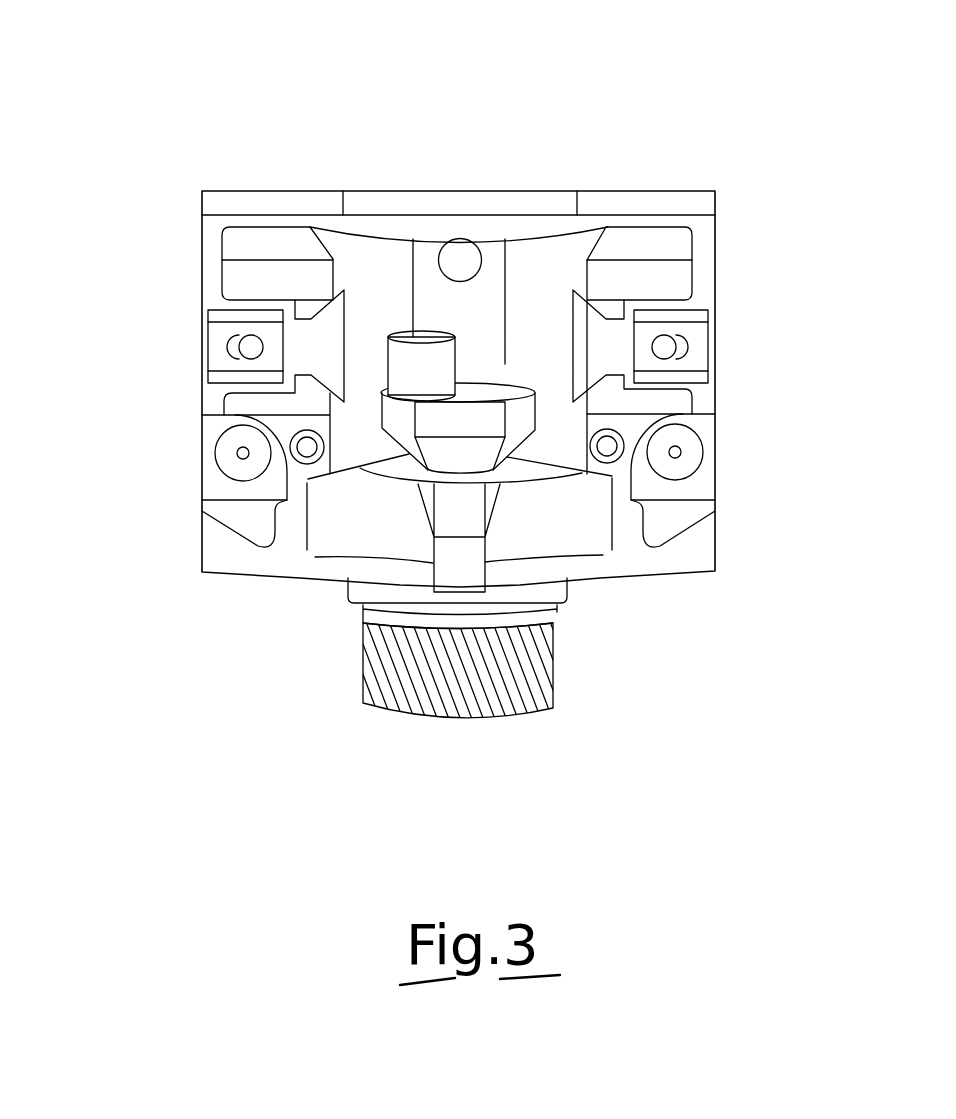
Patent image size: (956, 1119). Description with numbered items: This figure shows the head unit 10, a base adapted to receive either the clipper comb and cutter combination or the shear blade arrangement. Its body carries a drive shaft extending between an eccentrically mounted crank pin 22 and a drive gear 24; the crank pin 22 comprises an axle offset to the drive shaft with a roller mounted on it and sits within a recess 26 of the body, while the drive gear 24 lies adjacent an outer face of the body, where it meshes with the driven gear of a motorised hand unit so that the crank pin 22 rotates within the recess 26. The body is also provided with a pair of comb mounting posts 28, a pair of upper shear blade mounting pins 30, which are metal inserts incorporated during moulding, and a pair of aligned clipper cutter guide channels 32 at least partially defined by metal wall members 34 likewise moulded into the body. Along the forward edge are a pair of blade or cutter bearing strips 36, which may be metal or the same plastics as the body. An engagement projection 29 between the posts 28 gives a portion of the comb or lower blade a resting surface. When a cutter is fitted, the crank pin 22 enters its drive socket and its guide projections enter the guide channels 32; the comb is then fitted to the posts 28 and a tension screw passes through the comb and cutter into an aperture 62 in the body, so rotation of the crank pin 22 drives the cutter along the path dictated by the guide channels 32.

The head unit 10 is at (676, 106).
The crank pin 22 is at (423, 365).
The drive gear 24 is at (453, 707).
The recess 26 is at (467, 321).
The comb mounting posts 28 is at (224, 455).
The engagement projection 29 is at (458, 571).
The upper shear blade mounting pins 30 is at (308, 448).
The clipper cutter guide channels 32 is at (215, 346).
The metal wall members 34 is at (224, 318).
The bearing strips 36 is at (277, 202).
The aperture 62 is at (463, 252).